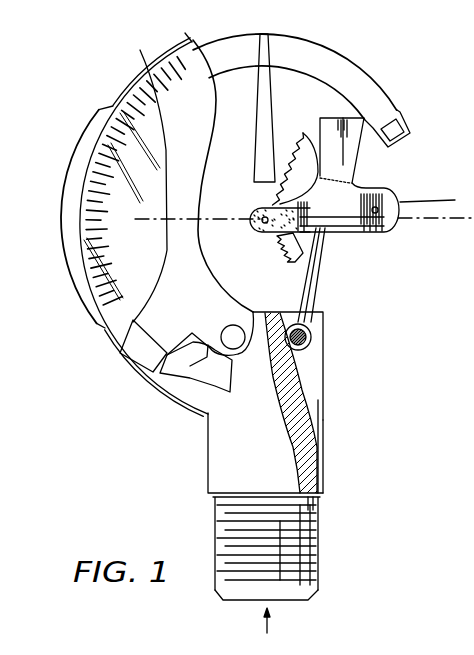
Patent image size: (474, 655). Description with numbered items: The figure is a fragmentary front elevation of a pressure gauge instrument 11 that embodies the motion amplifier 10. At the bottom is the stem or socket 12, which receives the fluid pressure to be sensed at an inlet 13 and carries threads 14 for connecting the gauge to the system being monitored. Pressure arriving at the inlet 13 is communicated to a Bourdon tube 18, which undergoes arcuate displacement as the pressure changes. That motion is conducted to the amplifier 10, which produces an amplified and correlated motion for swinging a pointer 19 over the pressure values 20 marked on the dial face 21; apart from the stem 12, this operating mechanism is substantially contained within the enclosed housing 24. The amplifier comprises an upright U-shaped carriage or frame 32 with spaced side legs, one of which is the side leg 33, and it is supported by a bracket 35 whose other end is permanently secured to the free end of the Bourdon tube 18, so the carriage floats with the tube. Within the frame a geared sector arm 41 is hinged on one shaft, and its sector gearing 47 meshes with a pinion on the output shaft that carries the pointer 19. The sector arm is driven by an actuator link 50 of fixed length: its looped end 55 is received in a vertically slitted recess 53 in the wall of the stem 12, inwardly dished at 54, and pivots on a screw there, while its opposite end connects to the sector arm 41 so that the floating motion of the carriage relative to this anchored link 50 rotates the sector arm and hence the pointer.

The amplifier 10 is at (382, 243).
The pressure gauge instrument 11 is at (70, 92).
The stem or socket 12 is at (230, 437).
The inlet 13 is at (287, 600).
The threads 14 is at (300, 537).
The Bourdon tube 18 is at (312, 58).
The pointer 19 is at (263, 107).
The pressure values 20 is at (147, 62).
The dial face 21 is at (133, 372).
The enclosed housing 24 is at (93, 337).
The U-shaped carriage or frame 32 is at (333, 245).
The side leg 33 is at (343, 163).
The bracket 35 is at (405, 115).
The geared sector arm 41 is at (307, 185).
The sector gearing 47 is at (292, 155).
The actuator link 50 is at (313, 295).
The vertically slitted recess 53 is at (320, 427).
The inwardly dished portion 54 is at (307, 370).
The looped end 55 is at (292, 328).